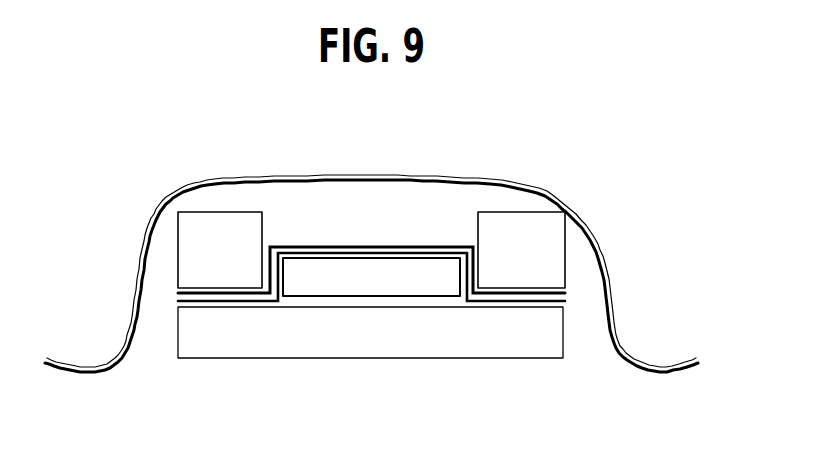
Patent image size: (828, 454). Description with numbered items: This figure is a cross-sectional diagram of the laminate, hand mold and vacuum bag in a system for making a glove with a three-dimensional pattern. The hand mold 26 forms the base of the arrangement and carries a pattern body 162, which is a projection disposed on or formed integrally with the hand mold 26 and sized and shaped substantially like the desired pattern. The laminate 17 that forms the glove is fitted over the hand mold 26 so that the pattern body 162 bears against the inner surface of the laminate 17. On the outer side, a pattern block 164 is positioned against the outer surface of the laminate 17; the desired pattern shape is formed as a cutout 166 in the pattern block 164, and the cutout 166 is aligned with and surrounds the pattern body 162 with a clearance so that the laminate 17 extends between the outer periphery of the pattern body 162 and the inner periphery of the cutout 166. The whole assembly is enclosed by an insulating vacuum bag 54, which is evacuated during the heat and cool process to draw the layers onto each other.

The vacuum bag 54 is at (363, 180).
The cutout 166 is at (295, 218).
The pattern block 164 is at (490, 220).
The laminate 17 is at (203, 297).
The pattern body 162 is at (433, 281).
The hand mold 26 is at (467, 338).